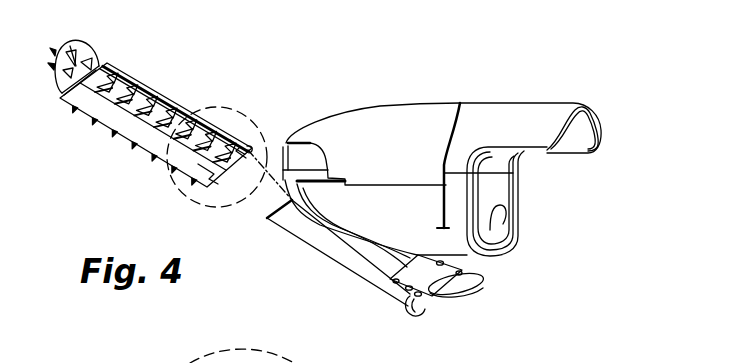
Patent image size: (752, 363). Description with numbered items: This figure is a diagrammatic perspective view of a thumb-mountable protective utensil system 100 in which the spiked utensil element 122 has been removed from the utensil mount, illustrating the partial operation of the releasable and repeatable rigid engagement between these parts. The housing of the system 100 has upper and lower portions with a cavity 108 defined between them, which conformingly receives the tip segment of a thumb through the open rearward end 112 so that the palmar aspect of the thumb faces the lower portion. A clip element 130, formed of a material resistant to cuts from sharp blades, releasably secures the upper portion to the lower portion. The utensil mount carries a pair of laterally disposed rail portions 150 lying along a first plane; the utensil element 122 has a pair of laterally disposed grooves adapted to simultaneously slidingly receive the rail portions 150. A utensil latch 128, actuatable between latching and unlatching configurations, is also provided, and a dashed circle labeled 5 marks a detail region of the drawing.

The thumb-mountable protective utensil system 100 is at (518, 72).
The clip element 130 is at (378, 117).
The open rearward end 112 is at (585, 197).
The cavity 108 is at (503, 212).
The utensil element 122 is at (101, 150).
The detail region of FIG. 5 is at (250, 119).
The rail portions 150 is at (329, 262).
The utensil latch 128 is at (478, 282).